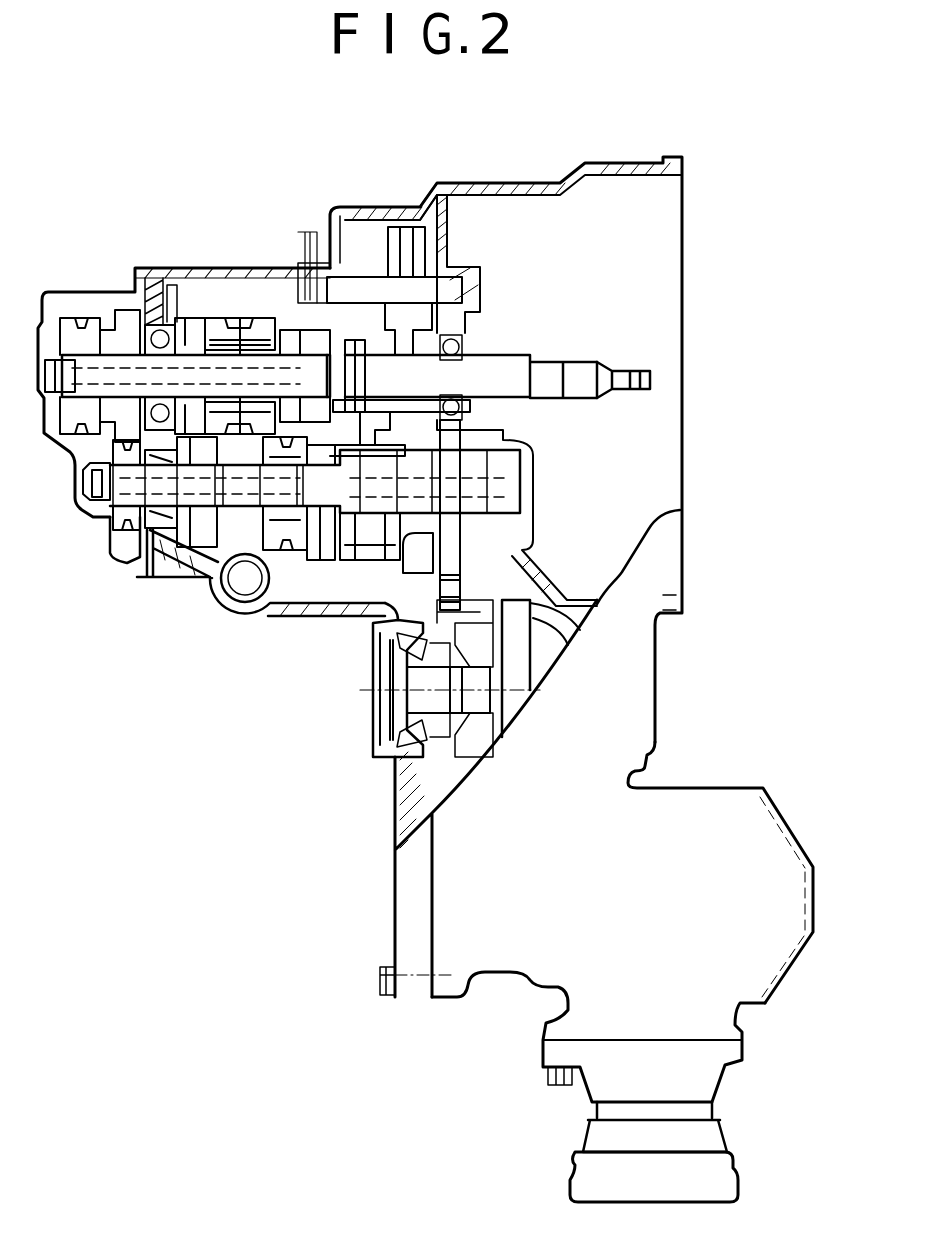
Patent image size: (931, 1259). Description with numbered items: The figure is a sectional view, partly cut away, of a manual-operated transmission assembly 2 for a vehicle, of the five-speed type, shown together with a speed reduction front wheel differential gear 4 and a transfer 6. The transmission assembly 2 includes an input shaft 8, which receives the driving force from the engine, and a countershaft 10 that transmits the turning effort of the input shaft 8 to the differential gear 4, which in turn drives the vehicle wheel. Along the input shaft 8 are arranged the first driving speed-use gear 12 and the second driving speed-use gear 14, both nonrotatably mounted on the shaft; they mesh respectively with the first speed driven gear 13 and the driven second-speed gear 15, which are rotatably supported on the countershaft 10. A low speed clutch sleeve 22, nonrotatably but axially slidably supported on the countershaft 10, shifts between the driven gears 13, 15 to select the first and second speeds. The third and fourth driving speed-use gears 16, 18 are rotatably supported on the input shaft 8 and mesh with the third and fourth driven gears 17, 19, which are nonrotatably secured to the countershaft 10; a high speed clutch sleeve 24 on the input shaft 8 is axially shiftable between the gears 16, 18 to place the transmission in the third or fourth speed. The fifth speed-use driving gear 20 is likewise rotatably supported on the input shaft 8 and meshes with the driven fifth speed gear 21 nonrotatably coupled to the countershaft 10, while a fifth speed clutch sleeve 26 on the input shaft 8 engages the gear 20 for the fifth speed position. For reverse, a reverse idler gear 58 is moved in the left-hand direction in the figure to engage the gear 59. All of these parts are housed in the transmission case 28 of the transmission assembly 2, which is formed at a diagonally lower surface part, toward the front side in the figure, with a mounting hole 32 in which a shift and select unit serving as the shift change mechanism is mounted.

The manual-operated transmission assembly 2 is at (707, 138).
The speed reduction front wheel differential gear 4 is at (430, 696).
The transfer 6 is at (697, 867).
The input shaft 8 is at (597, 370).
The countershaft 10 is at (237, 490).
The first driving speed-use gear 12 is at (430, 377).
The first speed driven gear 13 is at (420, 553).
The second driving speed-use gear 14 is at (313, 353).
The driven second-speed gear 15 is at (318, 560).
The third driving speed-use gear 16 is at (287, 330).
The third driven gear 17 is at (293, 547).
The fourth driving speed-use gear 18 is at (187, 333).
The fourth driven gear 19 is at (187, 522).
The fifth speed-use driving gear 20 is at (125, 320).
The driven fifth speed gear 21 is at (130, 527).
The low speed clutch sleeve 22 is at (363, 552).
The high speed clutch sleeve 24 is at (228, 310).
The fifth speed clutch sleeve 26 is at (73, 322).
The transmission case 28 is at (433, 197).
The mounting hole 32 is at (237, 587).
The reverse idler gear 58 is at (397, 227).
The gear 59 is at (360, 363).